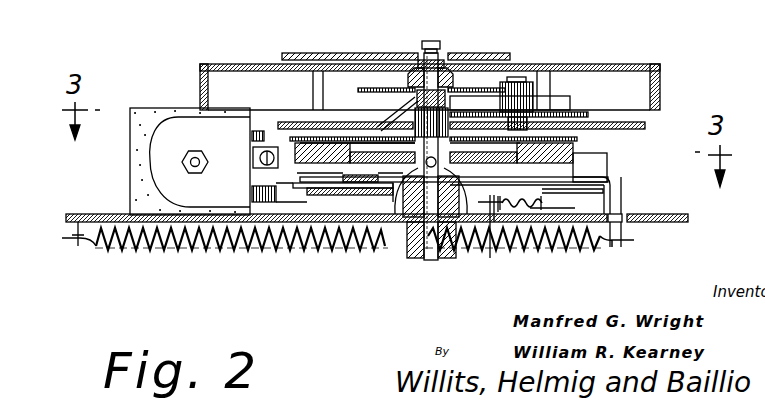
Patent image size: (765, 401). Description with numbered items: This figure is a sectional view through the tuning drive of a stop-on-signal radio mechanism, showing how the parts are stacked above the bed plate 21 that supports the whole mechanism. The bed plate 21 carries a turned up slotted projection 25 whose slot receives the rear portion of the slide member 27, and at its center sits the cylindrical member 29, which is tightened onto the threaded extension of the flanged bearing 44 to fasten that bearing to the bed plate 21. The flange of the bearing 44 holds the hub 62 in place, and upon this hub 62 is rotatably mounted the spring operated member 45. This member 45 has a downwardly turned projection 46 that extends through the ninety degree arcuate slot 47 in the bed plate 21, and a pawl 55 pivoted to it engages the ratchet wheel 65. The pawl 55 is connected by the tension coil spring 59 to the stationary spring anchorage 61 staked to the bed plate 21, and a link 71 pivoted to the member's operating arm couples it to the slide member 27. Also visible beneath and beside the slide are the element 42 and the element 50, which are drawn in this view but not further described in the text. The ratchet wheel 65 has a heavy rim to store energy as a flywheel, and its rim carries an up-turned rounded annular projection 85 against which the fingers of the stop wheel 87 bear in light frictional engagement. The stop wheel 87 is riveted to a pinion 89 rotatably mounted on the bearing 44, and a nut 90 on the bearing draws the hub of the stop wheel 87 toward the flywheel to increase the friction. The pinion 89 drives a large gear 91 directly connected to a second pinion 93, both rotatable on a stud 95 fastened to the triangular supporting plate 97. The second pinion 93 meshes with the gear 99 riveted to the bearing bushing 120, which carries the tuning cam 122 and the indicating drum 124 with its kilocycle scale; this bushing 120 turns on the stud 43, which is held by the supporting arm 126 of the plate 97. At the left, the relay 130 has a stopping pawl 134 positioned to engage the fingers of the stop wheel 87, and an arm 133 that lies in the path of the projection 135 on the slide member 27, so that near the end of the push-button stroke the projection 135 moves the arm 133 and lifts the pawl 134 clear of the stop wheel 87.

The bed plate 21 is at (688, 217).
The turned up slotted projection 25 is at (241, 266).
The slide member 27 is at (346, 195).
The cylindrical member 29 is at (412, 258).
The guide bar 42 is at (400, 195).
The stud 43 is at (440, 42).
The flanged bearing 44 is at (438, 260).
The spring operated member 45 is at (600, 179).
The downwardly turned projection 46 is at (630, 237).
The arcuate slot 47 is at (624, 207).
The return spring 50 is at (158, 250).
The pawl 55 is at (607, 165).
The tension coil spring 59 is at (546, 207).
The stationary spring anchorage 61 is at (505, 250).
The hub 62 is at (490, 250).
The ratchet wheel 65 is at (565, 150).
The link 71 is at (343, 178).
The annular projection 85 is at (578, 139).
The stop wheel 87 is at (266, 126).
The pinion 89 is at (510, 105).
The nut 90 is at (435, 187).
The large gear 91 is at (575, 114).
The second pinion 93 is at (538, 71).
The stud 95 is at (515, 77).
The triangular supporting plate 97 is at (645, 127).
The gear 99 is at (360, 91).
The bearing bushing 120 is at (424, 58).
The tuning cam 122 is at (335, 52).
The indicating drum 124 is at (200, 75).
The supporting arm 126 is at (415, 104).
The relay 130 is at (130, 170).
The arm 133 is at (258, 178).
The stopping pawl 134 is at (253, 135).
The projection 135 is at (252, 194).